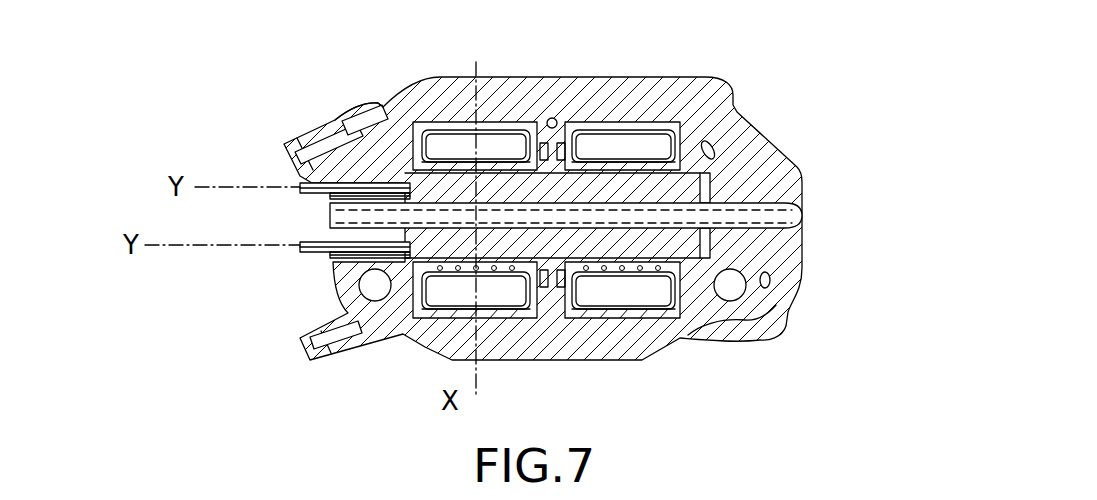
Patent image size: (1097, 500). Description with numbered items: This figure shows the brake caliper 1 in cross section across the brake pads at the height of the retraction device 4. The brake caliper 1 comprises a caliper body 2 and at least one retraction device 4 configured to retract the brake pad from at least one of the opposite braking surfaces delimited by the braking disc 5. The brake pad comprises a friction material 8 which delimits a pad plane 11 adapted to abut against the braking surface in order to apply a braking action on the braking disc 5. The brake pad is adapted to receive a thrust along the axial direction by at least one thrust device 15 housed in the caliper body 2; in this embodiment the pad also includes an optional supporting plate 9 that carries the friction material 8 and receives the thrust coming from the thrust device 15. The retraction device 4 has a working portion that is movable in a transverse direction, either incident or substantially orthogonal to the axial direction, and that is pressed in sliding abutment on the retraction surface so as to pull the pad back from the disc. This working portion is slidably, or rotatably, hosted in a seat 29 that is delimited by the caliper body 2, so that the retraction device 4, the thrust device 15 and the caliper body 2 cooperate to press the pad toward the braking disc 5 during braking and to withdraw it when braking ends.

The brake caliper 1 is at (120, 163).
The caliper body 2 is at (738, 100).
The retraction device 4 is at (290, 125).
The braking disc 5 is at (782, 216).
The friction material 8 is at (640, 155).
The supporting plate 9 is at (573, 130).
The pad plane 11 is at (805, 175).
The thrust device 15 is at (507, 115).
The seat 29 is at (383, 112).